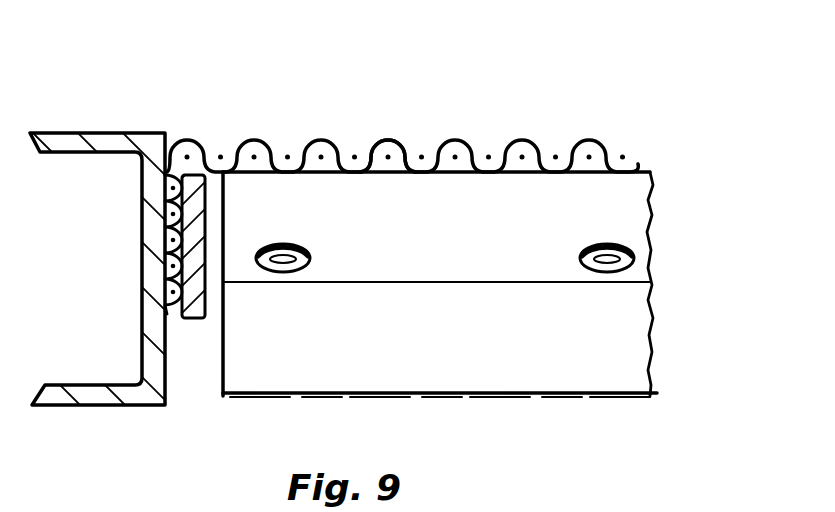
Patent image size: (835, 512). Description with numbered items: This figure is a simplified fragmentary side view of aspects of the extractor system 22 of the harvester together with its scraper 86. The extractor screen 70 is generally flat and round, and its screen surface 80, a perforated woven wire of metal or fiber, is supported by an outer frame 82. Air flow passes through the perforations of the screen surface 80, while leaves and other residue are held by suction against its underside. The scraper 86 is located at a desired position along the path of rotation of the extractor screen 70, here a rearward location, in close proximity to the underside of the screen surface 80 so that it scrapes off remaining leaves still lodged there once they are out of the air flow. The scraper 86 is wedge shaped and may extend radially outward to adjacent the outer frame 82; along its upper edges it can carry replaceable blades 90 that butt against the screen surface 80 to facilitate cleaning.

The extractor system 22 is at (668, 110).
The extractor screen 70 is at (588, 142).
The screen surface 80 is at (389, 140).
The outer frame 82 is at (89, 405).
The scraper 86 is at (628, 398).
The replaceable blades 90 is at (633, 207).